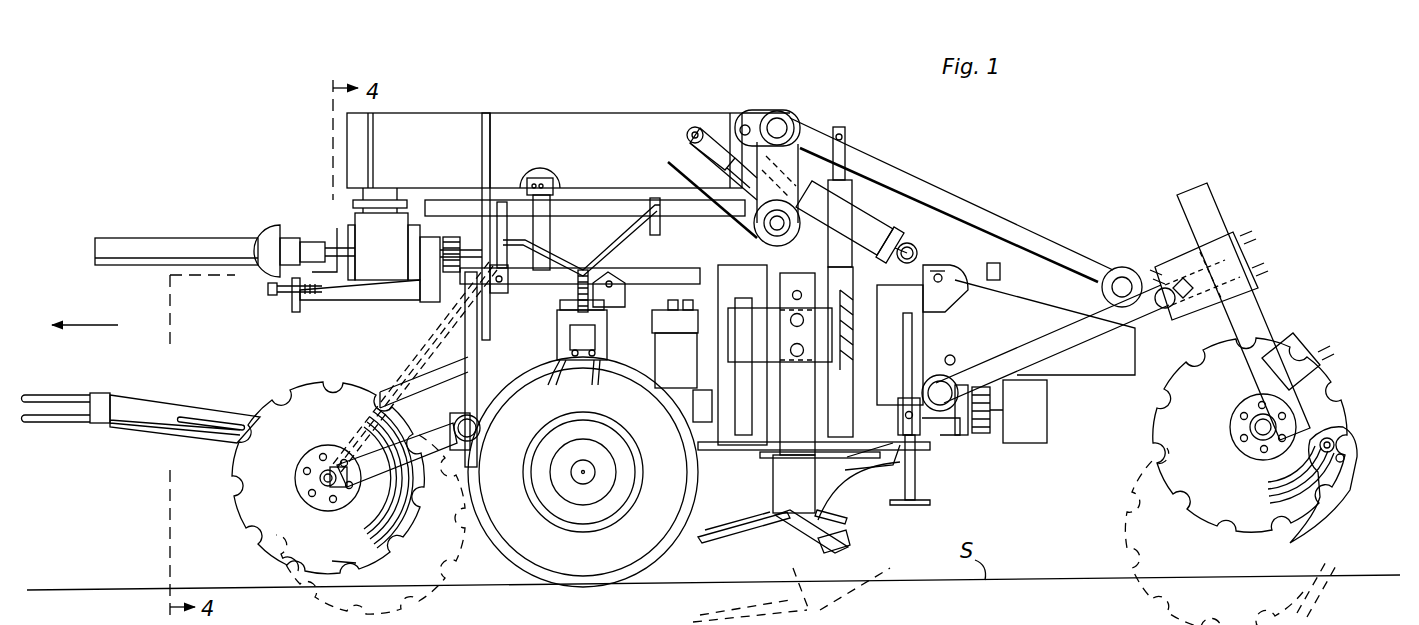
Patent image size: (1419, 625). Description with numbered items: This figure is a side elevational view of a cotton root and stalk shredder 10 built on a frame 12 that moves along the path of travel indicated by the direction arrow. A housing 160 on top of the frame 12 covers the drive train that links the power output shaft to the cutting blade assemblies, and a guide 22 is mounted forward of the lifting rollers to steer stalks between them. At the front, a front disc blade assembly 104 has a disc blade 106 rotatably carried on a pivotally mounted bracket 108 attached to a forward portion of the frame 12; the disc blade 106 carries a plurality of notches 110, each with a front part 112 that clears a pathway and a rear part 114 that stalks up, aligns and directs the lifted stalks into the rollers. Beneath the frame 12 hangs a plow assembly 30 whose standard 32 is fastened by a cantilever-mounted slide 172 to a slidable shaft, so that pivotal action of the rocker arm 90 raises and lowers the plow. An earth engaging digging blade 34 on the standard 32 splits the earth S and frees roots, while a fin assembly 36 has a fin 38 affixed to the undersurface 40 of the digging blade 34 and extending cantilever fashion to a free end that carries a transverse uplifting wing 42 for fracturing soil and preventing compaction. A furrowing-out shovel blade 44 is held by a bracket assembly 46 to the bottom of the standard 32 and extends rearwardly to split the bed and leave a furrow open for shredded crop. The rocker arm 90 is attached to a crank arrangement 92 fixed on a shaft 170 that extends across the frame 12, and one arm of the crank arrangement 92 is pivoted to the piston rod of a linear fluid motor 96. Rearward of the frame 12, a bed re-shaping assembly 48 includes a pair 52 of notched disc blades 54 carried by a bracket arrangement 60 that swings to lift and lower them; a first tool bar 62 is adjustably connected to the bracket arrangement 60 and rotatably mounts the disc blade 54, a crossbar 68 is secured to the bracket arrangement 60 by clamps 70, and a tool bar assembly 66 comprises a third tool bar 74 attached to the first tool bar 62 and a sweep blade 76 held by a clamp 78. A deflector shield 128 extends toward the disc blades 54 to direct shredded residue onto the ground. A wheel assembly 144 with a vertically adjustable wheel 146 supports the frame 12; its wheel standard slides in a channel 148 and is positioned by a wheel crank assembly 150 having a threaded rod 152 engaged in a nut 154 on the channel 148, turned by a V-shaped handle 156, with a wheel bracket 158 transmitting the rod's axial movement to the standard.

The root and stalk shredder 10 is at (957, 186).
The frame 12 is at (212, 446).
The guide 22 is at (428, 368).
The plow assembly 30 is at (798, 513).
The standard 32 is at (797, 416).
The digging blade 34 is at (772, 520).
The fin assembly 36 is at (850, 538).
The fin 38 is at (790, 535).
The undersurface 40 is at (748, 528).
The uplifting wing 42 is at (834, 550).
The furrowing-out shovel blade 44 is at (866, 498).
The bracket assembly 46 is at (832, 513).
The bed re-shaping assembly 48 is at (1166, 246).
The pair of notched disc blades 52 is at (1252, 359).
The notched disc blade 54 is at (1227, 435).
The bracket arrangement 60 is at (1023, 224).
The first tool bar 62 is at (1255, 310).
The tool bar assembly 66 is at (1343, 473).
The crossbar 68 is at (1183, 300).
The clamp 70 is at (1193, 267).
The third tool bar 74 is at (1303, 407).
The sweep blade 76 is at (1352, 463).
The clamp 78 is at (1295, 355).
The rocker arm 90 is at (966, 212).
The crank arrangement 92 is at (724, 188).
The linear fluid motor 96 is at (866, 215).
The front disc blade assembly 104 is at (319, 462).
The disc blade 106 is at (272, 512).
The pivotally mounted bracket 108 is at (378, 446).
The notch 110 is at (400, 536).
The front part 112 is at (275, 565).
The rear part 114 is at (345, 558).
The deflector shield 128 is at (1073, 362).
The wheel assembly 144 is at (568, 356).
The wheel 146 is at (521, 530).
The channel 148 is at (552, 358).
The wheel crank assembly 150 is at (588, 263).
The threaded rod 152 is at (626, 268).
The nut 154 is at (604, 314).
The V-shaped handle 156 is at (552, 240).
The wheel bracket 158 is at (598, 360).
The housing 160 is at (512, 136).
The shaft 170 is at (776, 210).
The slide 172 is at (772, 332).